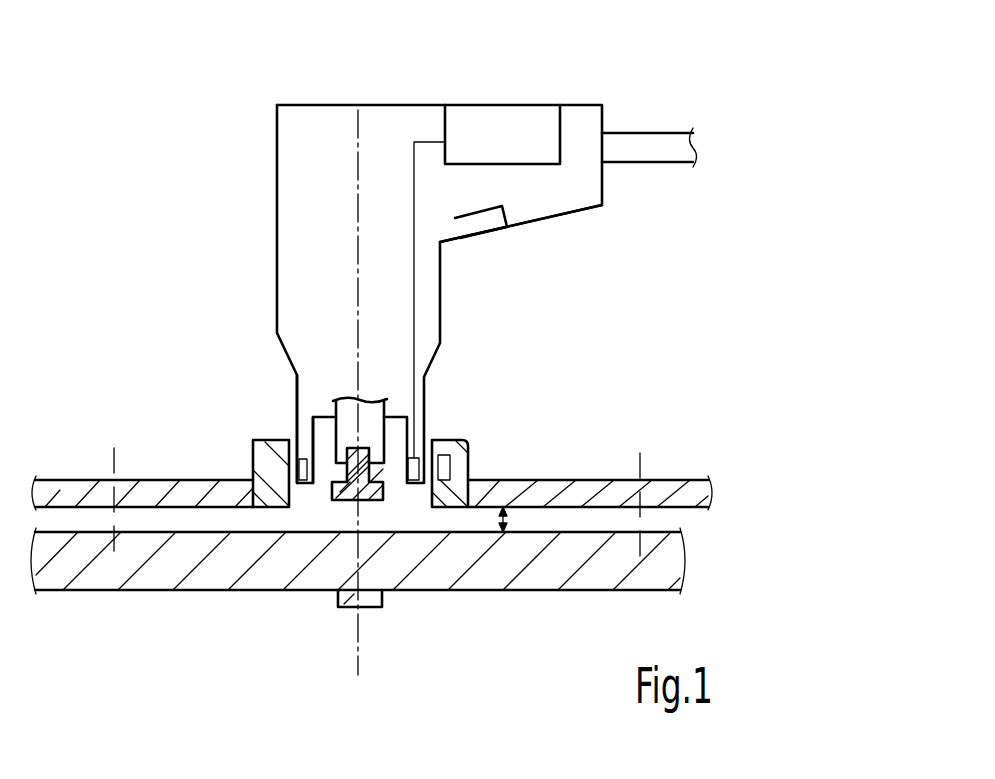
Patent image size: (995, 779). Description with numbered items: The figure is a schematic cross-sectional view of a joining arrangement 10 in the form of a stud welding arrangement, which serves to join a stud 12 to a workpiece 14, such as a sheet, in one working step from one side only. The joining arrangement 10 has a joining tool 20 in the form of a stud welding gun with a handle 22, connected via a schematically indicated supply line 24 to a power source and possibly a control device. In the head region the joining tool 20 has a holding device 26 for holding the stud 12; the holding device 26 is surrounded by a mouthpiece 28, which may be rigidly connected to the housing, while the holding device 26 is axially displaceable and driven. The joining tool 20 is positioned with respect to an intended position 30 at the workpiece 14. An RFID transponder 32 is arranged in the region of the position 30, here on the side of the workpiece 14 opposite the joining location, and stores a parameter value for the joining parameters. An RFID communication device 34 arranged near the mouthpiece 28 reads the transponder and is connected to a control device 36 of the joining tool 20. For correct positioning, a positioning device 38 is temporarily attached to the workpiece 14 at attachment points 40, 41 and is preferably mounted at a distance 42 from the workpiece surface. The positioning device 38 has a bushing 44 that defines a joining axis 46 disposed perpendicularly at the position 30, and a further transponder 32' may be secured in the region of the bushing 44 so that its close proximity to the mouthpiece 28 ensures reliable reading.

The joining arrangement 10 is at (695, 110).
The stud 12 is at (340, 502).
The workpiece 14 is at (575, 573).
The joining tool 20 is at (444, 293).
The handle 22 is at (583, 186).
The supply line 24 is at (671, 152).
The holding device 26 is at (350, 428).
The mouthpiece 28 is at (297, 435).
The position 30 is at (363, 535).
The RFID transponder 32 is at (342, 596).
The transponder 32' is at (506, 443).
The RFID communication device 34 is at (300, 488).
The control device 36 is at (507, 138).
The positioning device 38 is at (562, 495).
The attachment point 40 is at (110, 527).
The attachment point 41 is at (643, 518).
The distance 42 is at (503, 522).
The bushing 44 is at (270, 465).
The joining axis 46 is at (354, 296).